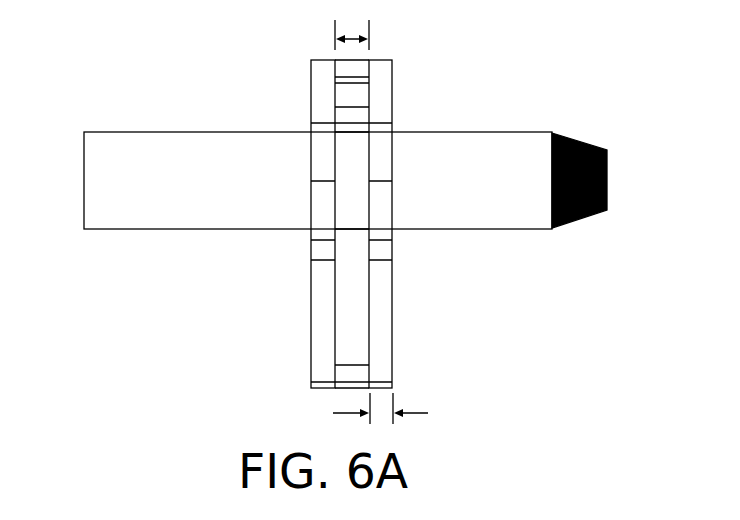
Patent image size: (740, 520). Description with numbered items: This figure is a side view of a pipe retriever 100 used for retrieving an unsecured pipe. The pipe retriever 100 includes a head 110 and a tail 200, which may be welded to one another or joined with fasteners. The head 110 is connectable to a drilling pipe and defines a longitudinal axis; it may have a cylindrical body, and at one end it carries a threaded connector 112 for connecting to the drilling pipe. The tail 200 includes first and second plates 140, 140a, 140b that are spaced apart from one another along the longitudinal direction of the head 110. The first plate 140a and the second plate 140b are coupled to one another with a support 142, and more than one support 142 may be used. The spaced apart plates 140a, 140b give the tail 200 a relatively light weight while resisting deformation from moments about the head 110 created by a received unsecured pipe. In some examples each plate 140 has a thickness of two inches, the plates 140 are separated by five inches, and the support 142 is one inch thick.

The pipe retriever 100 is at (142, 81).
The head 110 is at (268, 131).
The threaded connector 112 is at (608, 124).
The tail 200 is at (320, 60).
The plates 140 is at (351, 224).
The first plate 140a is at (311, 297).
The second plate 140b is at (393, 296).
The support 142 is at (347, 389).